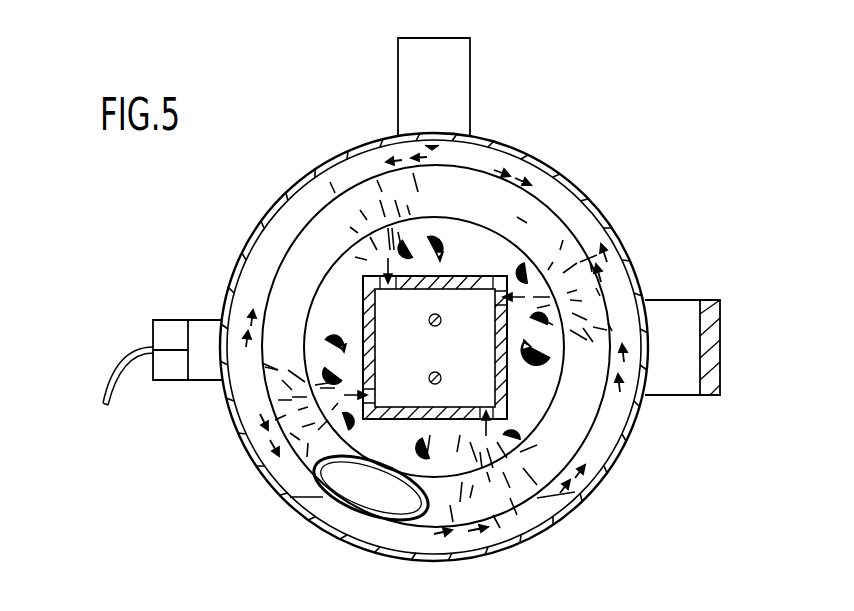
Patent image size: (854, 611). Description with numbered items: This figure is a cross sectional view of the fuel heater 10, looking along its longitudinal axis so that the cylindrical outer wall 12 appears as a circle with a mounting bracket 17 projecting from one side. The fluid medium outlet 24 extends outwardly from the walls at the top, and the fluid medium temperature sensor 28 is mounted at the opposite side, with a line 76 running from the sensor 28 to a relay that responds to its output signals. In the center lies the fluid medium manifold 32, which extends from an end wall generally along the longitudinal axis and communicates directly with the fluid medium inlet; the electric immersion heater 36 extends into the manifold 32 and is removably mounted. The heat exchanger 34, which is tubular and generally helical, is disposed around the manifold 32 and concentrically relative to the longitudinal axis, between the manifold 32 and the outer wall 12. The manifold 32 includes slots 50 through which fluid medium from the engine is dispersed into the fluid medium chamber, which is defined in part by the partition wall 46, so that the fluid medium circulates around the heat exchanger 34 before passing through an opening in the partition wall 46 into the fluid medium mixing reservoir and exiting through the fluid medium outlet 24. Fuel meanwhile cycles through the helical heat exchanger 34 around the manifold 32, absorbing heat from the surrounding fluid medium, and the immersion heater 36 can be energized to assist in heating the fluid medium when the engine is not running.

The fuel heater 10 is at (292, 116).
The cylindrical outer wall 12 is at (492, 146).
The mounting bracket 17 is at (680, 300).
The fluid medium outlet 24 is at (470, 53).
The fluid medium temperature sensor 28 is at (153, 332).
The fluid medium manifold 32 is at (362, 318).
The heat exchanger 34 is at (334, 198).
The electric immersion heater 36 is at (437, 315).
The partition wall 46 is at (614, 428).
The slots 50 is at (495, 264).
The line 76 is at (95, 387).